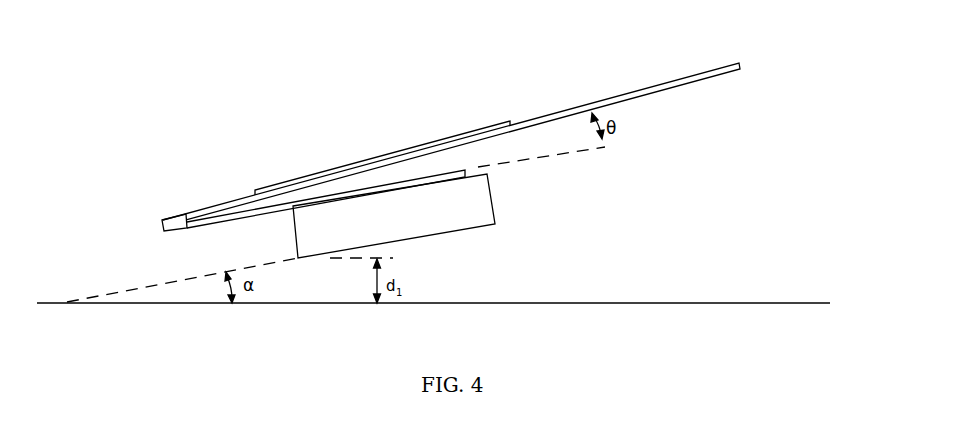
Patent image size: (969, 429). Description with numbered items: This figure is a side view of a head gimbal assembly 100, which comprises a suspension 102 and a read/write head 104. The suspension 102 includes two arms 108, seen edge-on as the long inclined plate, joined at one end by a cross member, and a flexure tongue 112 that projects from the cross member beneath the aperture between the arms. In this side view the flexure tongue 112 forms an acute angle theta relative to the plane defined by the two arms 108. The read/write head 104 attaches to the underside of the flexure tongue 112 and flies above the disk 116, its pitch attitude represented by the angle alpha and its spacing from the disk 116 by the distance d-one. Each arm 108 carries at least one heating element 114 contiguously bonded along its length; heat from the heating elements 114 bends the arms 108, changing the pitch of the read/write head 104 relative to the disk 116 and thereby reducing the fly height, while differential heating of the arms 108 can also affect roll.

The head gimbal assembly 100 is at (240, 96).
The suspension 102 is at (162, 227).
The read/write head 104 is at (495, 207).
The arms 108 is at (443, 147).
The flexure tongue 112 is at (268, 213).
The heating element 114 is at (290, 178).
The disk 116 is at (690, 302).